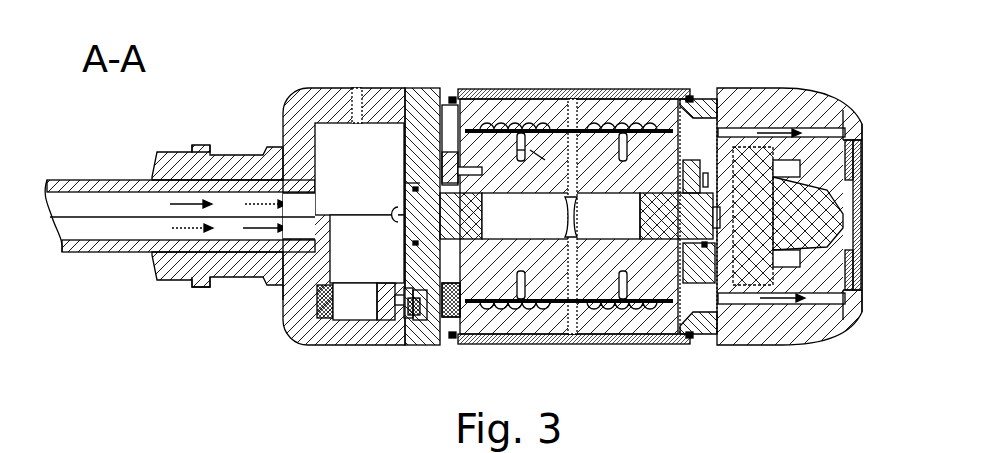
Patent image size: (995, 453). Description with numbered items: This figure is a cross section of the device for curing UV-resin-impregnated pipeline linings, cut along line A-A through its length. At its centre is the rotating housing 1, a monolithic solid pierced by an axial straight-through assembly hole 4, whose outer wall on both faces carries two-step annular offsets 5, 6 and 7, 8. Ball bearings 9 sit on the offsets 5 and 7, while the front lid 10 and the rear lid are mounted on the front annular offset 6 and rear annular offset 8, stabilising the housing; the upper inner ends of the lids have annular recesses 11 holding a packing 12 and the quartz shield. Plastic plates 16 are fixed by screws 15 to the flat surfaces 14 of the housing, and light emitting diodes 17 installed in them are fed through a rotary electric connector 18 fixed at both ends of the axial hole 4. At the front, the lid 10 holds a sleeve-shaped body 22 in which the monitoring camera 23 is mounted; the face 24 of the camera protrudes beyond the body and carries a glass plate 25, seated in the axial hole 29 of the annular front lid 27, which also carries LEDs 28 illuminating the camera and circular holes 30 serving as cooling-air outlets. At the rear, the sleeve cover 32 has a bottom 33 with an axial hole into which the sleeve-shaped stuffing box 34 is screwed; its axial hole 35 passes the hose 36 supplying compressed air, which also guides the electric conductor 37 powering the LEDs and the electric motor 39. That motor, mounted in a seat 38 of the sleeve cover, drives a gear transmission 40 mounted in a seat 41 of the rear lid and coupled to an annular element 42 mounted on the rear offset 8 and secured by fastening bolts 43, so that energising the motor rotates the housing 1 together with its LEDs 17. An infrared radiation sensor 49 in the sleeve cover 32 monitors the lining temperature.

The rotating housing 1 is at (580, 290).
The axial straight-through assembly hole 4 is at (538, 157).
The annular offset 5 is at (702, 178).
The front annular offset 6 is at (685, 175).
The annular offset 7 is at (410, 185).
The rear annular offset 8 is at (468, 305).
The ball bearings 9 is at (427, 110).
The front lid 10 is at (436, 105).
The annular recesses 11 is at (452, 98).
The packing 12 is at (452, 98).
The flat surfaces 14 is at (465, 125).
The screws 15 is at (520, 150).
The plastic plates 16 is at (666, 125).
The light emitting diodes 17 is at (593, 130).
The rotary electric connector 18 is at (407, 207).
The sleeve-shaped body 22 is at (793, 107).
The monitoring camera 23 is at (775, 338).
The face of the central portion of the camera 24 is at (902, 178).
The glass plate 25 is at (905, 257).
The annular front lid 27 is at (863, 147).
The LEDs 28 is at (862, 152).
The axial hole 29 is at (905, 210).
The circular holes 30 is at (827, 135).
The sleeve cover 32 is at (320, 100).
The bottom 33 is at (283, 300).
The sleeve-shaped stuffing box 34 is at (203, 265).
The axial hole 35 is at (163, 203).
The hose 36 is at (104, 244).
The electric conductor 37 is at (152, 222).
The seat 38 is at (283, 287).
The electric motor 39 is at (365, 308).
The gear transmission 40 is at (437, 317).
The seat 41 is at (236, 150).
The annular element 42 is at (414, 312).
The fastening bolts 43 is at (475, 163).
The infrared radiation sensor 49 is at (358, 125).